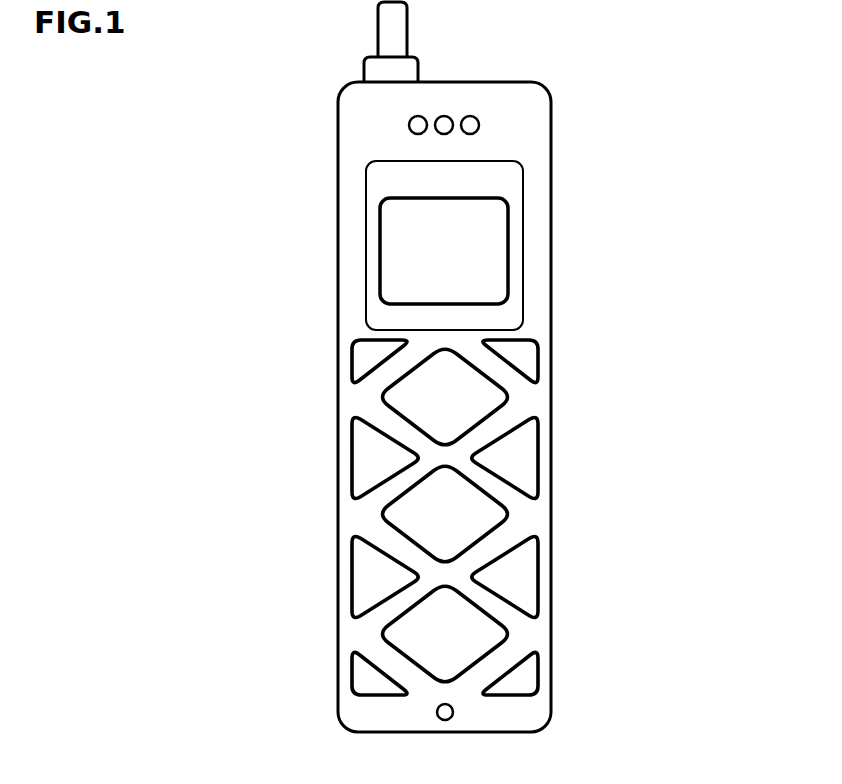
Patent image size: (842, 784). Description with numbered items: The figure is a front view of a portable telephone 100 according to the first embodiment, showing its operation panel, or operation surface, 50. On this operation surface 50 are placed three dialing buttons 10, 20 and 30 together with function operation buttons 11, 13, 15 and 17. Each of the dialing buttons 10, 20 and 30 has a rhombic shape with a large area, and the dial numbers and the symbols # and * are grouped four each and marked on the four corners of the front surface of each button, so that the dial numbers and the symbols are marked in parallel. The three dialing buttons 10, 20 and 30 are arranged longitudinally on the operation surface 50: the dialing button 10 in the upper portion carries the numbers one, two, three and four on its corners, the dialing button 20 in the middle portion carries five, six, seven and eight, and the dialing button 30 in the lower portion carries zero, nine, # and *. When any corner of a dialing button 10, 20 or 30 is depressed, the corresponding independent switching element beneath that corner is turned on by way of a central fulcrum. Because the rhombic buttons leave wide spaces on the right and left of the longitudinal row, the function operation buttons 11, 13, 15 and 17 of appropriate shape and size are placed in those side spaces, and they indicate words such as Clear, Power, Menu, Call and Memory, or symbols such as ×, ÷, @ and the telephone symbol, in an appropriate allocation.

The portable telephone 100 is at (743, 205).
The operation panel 50 is at (420, 262).
The dialing button 10 is at (378, 400).
The dialing button 20 is at (378, 518).
The dialing button 30 is at (378, 635).
The function operation button 11 is at (377, 356).
The function operation button 13 is at (377, 458).
The function operation button 15 is at (377, 577).
The function operation button 17 is at (377, 675).